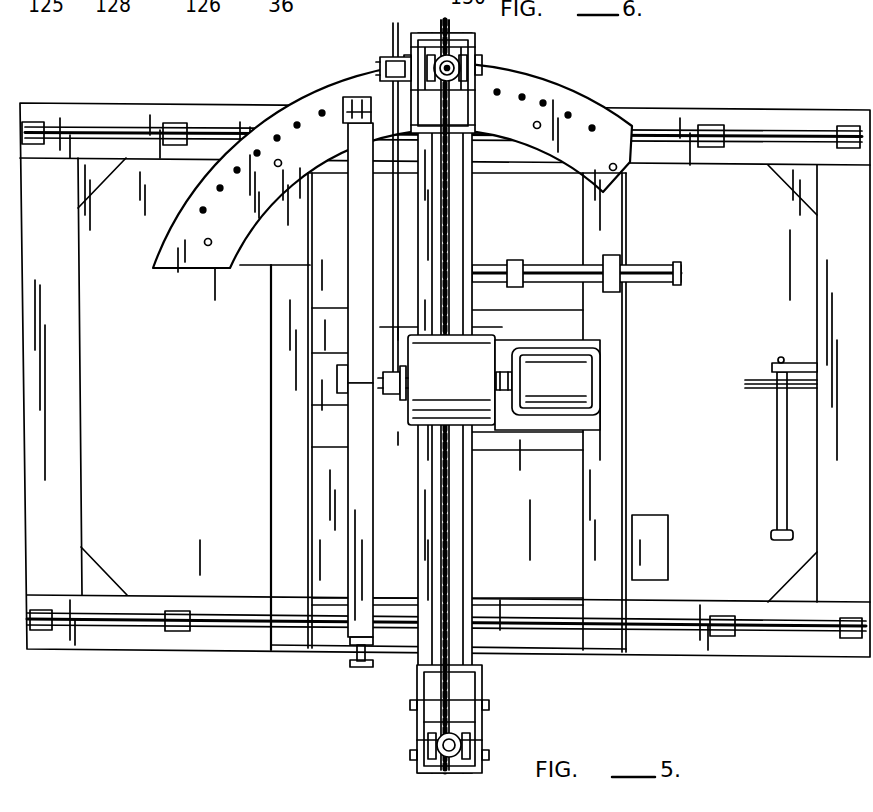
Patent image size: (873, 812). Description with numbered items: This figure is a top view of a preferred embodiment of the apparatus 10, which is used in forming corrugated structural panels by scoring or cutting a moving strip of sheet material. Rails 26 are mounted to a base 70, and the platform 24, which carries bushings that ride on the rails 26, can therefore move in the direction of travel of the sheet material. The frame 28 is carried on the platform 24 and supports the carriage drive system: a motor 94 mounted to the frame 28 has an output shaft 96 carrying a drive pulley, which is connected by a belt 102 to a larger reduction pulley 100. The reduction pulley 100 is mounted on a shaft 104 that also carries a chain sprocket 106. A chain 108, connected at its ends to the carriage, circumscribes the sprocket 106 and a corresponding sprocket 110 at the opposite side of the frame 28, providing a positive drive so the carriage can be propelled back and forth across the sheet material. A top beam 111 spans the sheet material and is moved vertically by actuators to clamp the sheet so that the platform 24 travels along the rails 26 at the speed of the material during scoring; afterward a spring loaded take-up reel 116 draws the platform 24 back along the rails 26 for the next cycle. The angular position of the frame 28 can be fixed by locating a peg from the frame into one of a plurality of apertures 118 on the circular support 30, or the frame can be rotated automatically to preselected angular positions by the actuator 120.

The apparatus 10 is at (692, 73).
The platform 24 is at (606, 640).
The rails 26 is at (797, 133).
The frame 28 is at (463, 478).
The circular support 30 is at (392, 165).
The base 70 is at (80, 383).
The motor 94 is at (585, 367).
The output shaft 96 is at (387, 394).
The reduction pulley 100 is at (391, 40).
The belt 102 is at (372, 250).
The shaft 104 is at (456, 68).
The chain sprocket 106 is at (457, 42).
The chain 108 is at (440, 50).
The sprocket 110 is at (463, 748).
The top beam 111 is at (367, 528).
The spring loaded take-up reel 116 is at (770, 386).
The apertures 118 is at (590, 109).
The actuator 120 is at (532, 263).